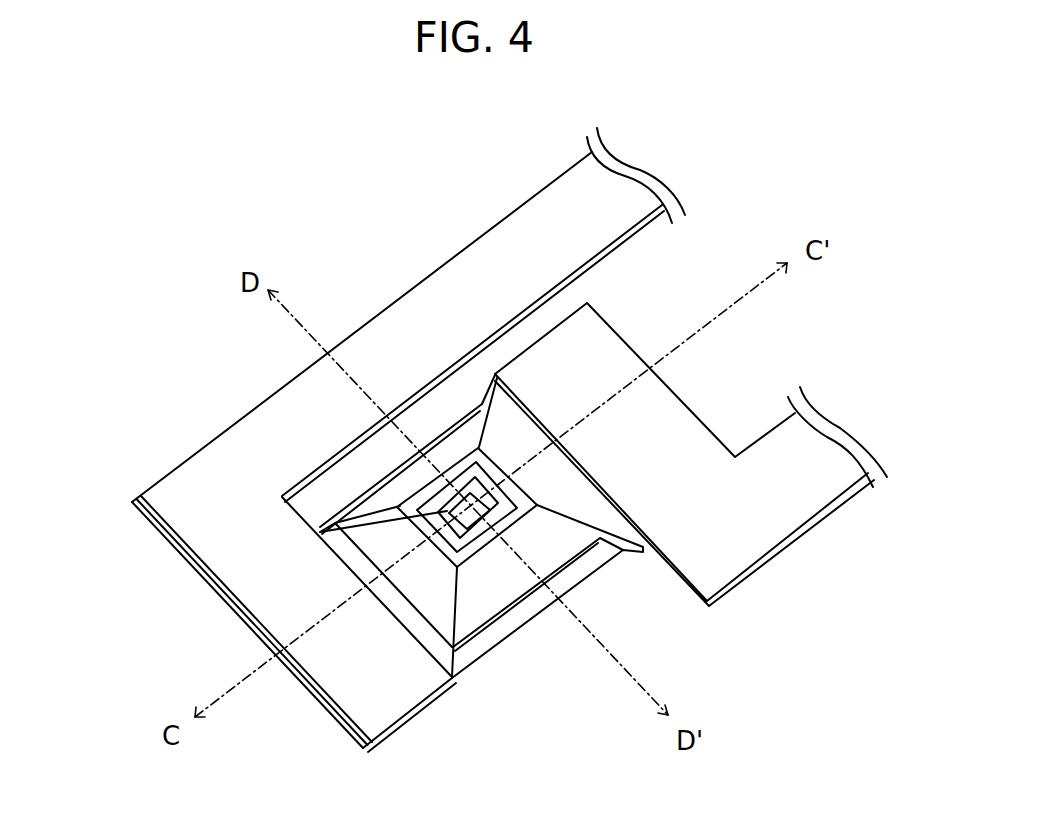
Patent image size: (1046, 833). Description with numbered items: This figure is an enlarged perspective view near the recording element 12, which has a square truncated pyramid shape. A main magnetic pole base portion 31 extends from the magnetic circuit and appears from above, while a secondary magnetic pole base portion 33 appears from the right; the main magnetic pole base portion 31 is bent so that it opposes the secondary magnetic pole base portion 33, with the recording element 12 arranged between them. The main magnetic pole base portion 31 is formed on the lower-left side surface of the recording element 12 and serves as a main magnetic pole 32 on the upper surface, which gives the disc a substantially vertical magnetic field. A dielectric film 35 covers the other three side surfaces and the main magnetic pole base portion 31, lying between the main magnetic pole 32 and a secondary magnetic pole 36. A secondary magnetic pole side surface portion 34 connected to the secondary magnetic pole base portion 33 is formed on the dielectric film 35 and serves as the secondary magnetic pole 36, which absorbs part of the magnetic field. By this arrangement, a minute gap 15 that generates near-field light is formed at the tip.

The main magnetic pole base portion 31 is at (205, 487).
The main magnetic pole 32 is at (400, 518).
The secondary magnetic pole base portion 33 is at (743, 532).
The secondary magnetic pole side surface portion 34 is at (397, 492).
The dielectric film 35 is at (474, 476).
The secondary magnetic pole 36 is at (446, 515).
The recording element 12 is at (657, 559).
The minute gap 15 is at (473, 500).